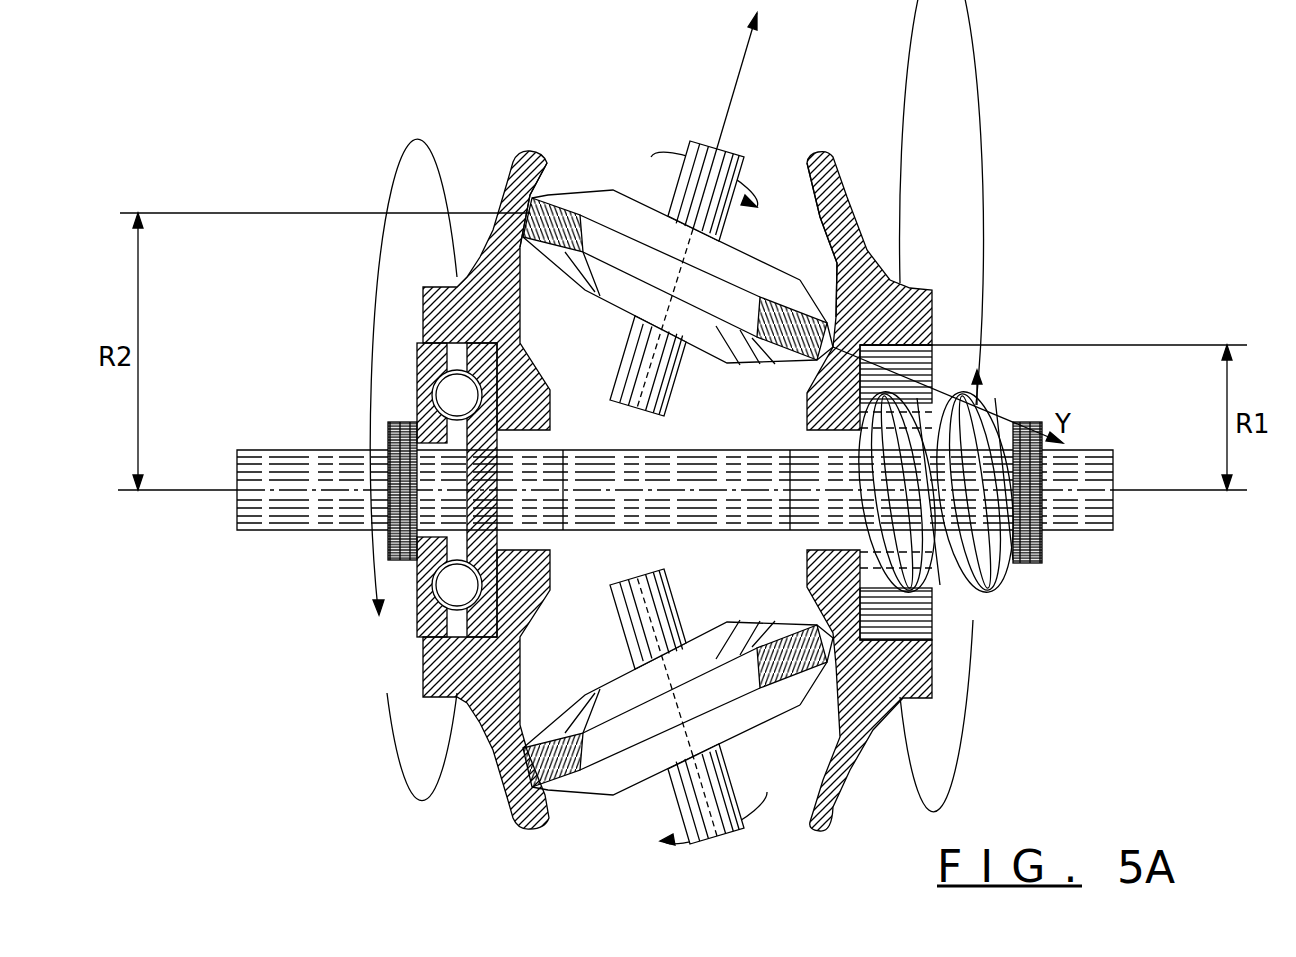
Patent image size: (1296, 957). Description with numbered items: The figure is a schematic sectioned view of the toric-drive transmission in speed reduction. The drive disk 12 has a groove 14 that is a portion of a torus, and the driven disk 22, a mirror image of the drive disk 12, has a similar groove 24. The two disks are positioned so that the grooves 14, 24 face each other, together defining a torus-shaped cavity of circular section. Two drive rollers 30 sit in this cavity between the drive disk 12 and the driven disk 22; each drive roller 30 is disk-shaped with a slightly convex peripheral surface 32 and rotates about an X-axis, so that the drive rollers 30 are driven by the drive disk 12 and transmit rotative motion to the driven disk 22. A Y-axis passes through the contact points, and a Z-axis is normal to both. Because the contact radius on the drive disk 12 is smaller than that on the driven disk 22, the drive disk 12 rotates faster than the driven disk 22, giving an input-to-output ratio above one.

The drive disk 12 is at (818, 165).
The groove 14 is at (833, 267).
The driven disk 22 is at (510, 180).
The groove 24 is at (548, 185).
The drive roller 30 is at (678, 214).
The peripheral surface 32 is at (580, 262).